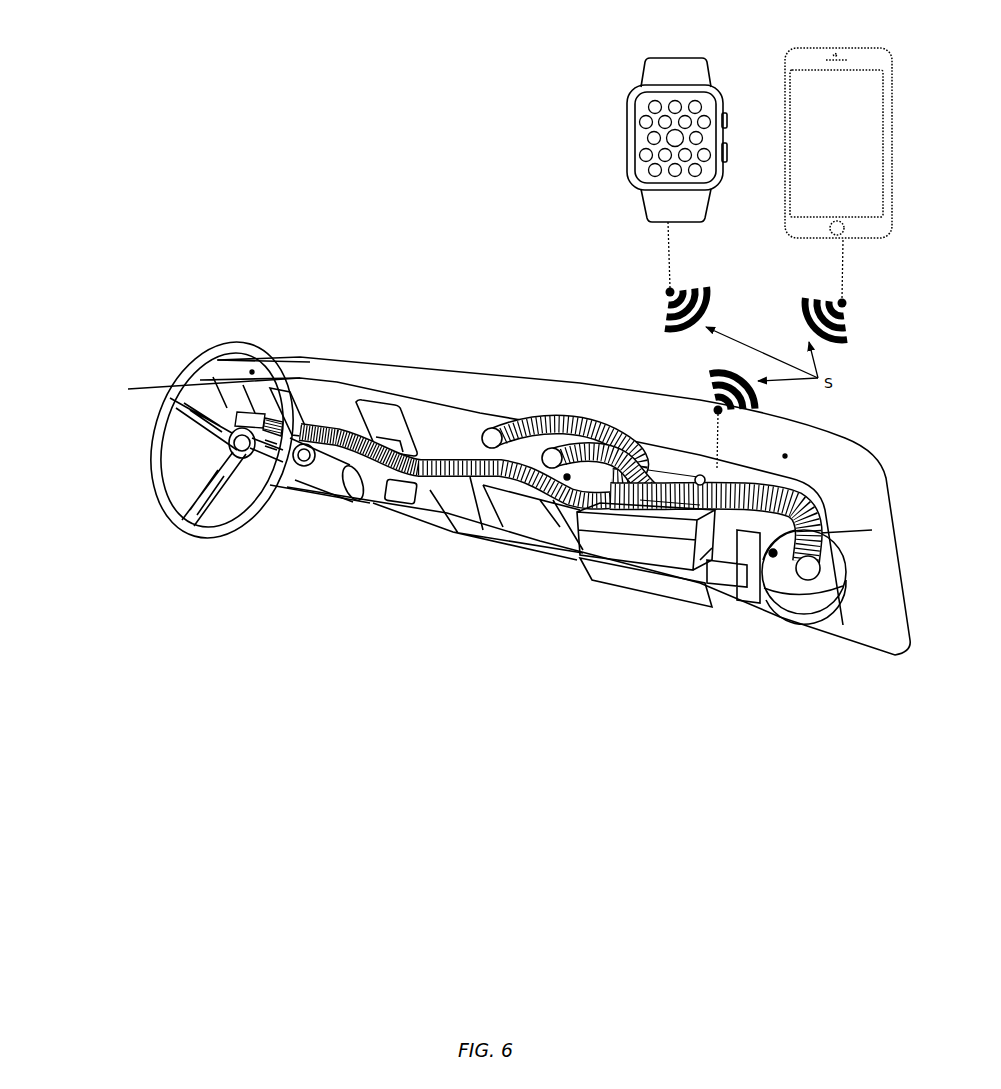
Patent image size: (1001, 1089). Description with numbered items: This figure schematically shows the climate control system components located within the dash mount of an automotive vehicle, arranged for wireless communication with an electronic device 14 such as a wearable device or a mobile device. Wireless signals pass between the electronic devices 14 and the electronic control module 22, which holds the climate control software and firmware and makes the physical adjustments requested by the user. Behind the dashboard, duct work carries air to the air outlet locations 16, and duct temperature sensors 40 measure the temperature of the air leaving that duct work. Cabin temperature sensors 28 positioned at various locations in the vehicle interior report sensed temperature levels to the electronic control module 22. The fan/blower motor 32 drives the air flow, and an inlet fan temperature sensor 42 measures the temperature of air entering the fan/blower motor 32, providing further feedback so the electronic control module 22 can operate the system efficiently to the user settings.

The electronic device 14 is at (808, 125).
The air outlet locations 16 is at (552, 500).
The electronic control module 22 is at (697, 478).
The cabin temperature sensor 28 is at (832, 430).
The fan/blower motor 32 is at (798, 604).
The duct temperature sensor 40 is at (237, 418).
The inlet fan temperature sensor 42 is at (773, 553).